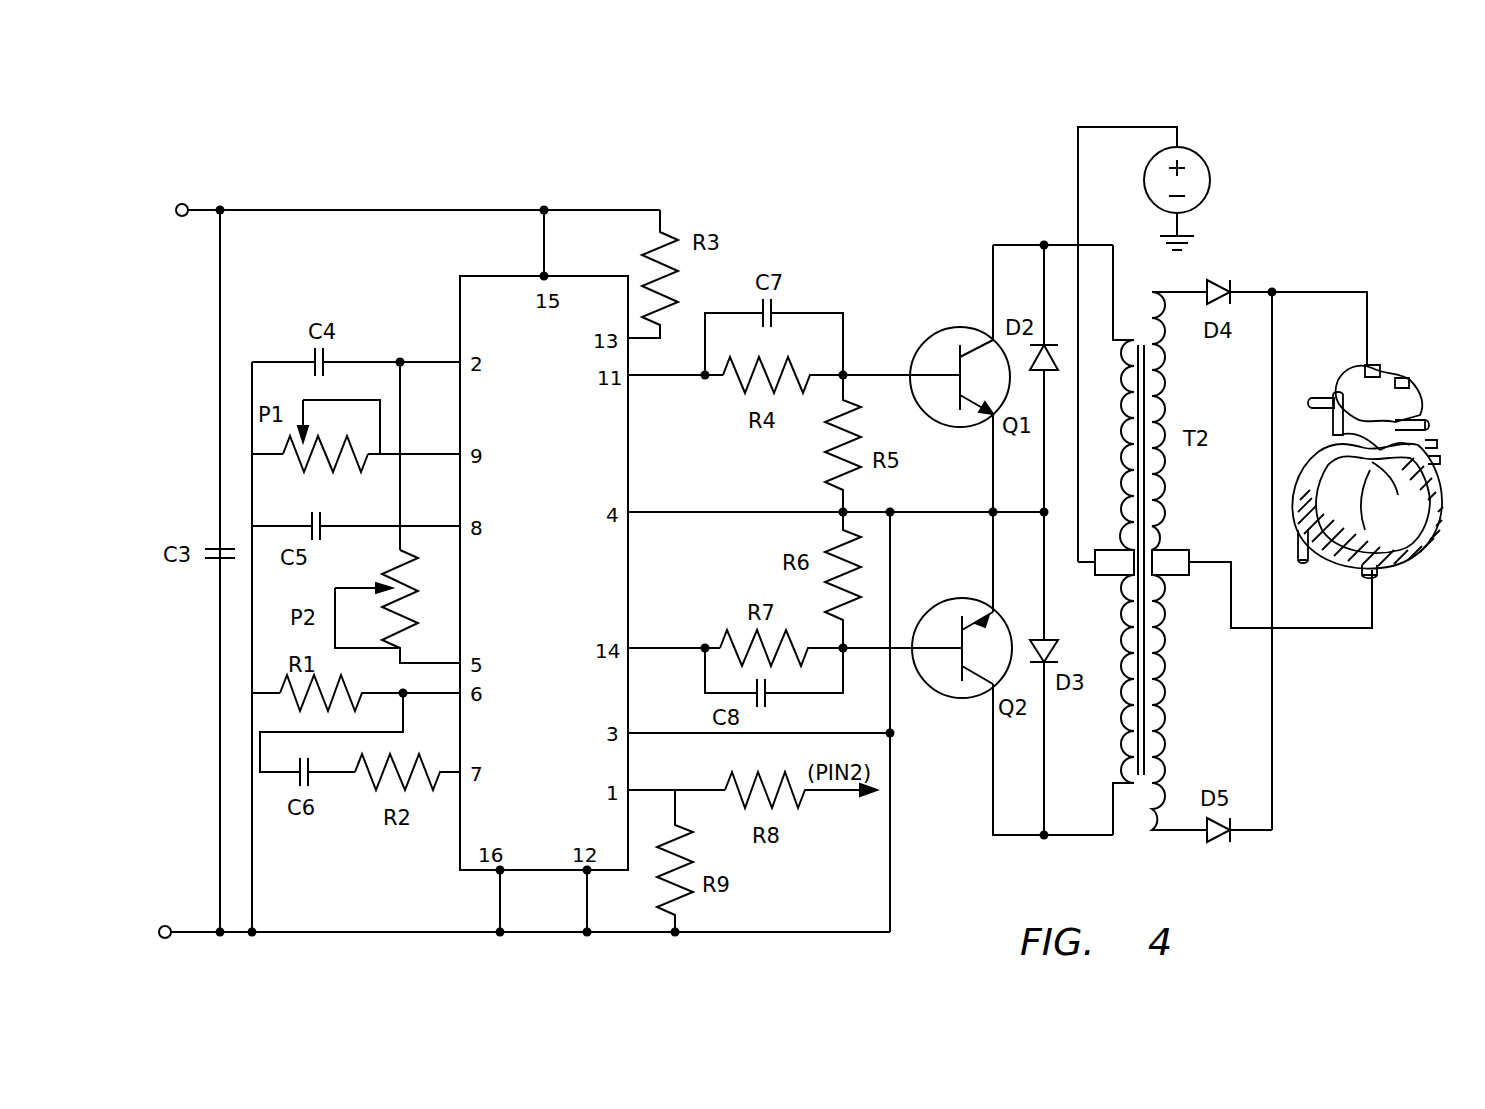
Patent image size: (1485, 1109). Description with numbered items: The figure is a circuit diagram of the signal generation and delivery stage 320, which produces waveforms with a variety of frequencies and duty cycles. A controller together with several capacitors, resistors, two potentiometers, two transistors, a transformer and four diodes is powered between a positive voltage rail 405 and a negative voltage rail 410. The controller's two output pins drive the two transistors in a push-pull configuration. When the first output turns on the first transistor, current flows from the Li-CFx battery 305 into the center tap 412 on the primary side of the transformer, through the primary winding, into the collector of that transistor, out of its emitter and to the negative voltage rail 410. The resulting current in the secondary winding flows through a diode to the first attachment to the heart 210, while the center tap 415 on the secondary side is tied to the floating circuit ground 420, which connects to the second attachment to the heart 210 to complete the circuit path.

The positive voltage rail 405 is at (178, 200).
The negative voltage rail 410 is at (167, 940).
The signal generation and delivery stage 320 is at (738, 185).
The Li-CFx battery 305 is at (1203, 160).
The center tap on the primary side of the transformer 412 is at (1090, 562).
The center tap on the secondary side of the transformer 415 is at (1188, 562).
The floating circuit ground 420 is at (1305, 628).
The heart 210 is at (1417, 397).